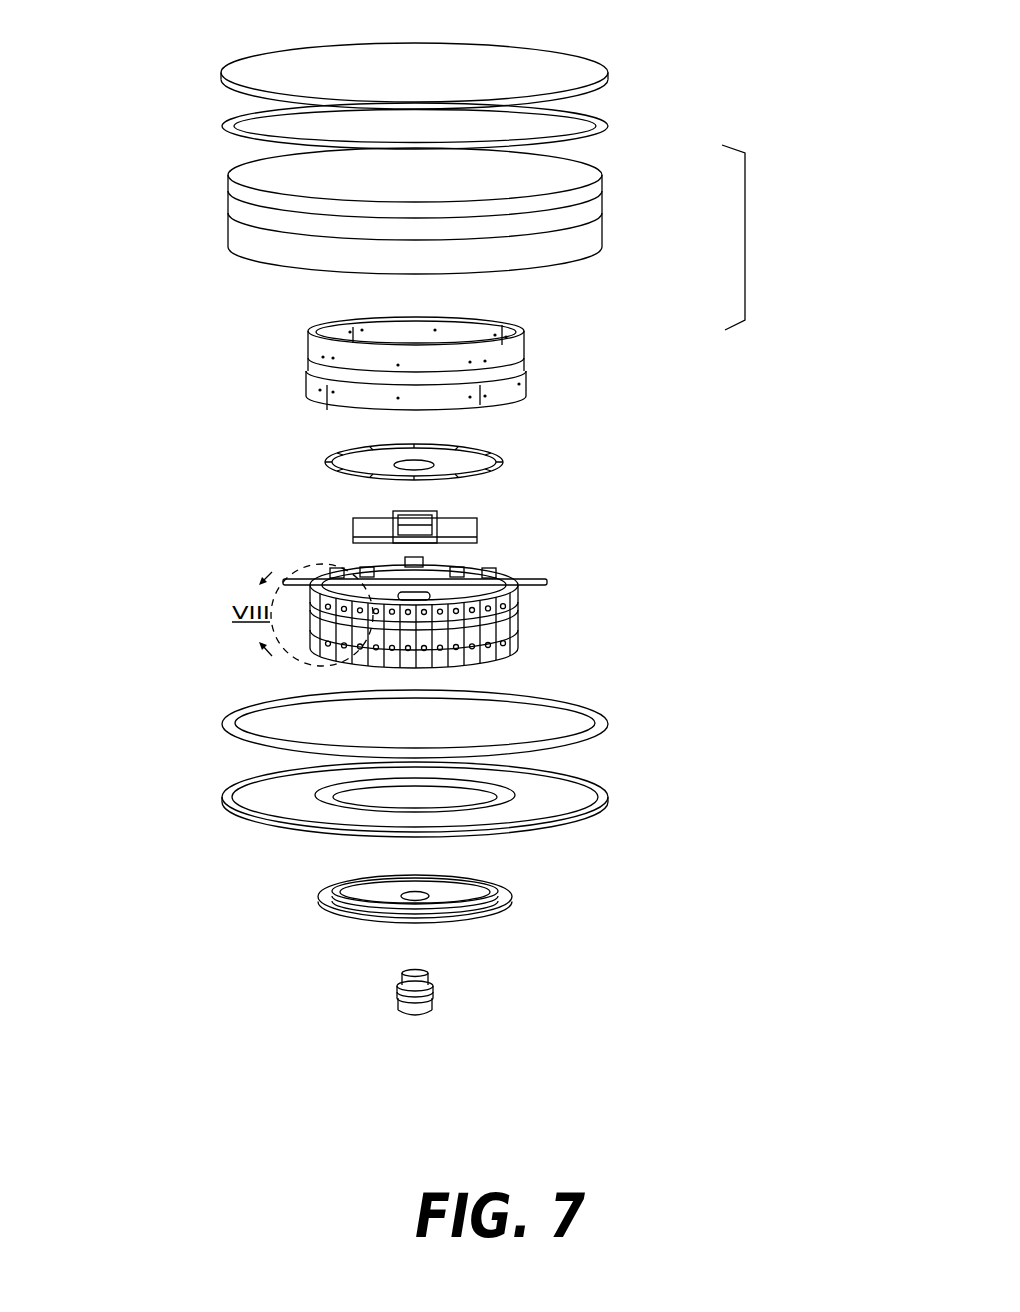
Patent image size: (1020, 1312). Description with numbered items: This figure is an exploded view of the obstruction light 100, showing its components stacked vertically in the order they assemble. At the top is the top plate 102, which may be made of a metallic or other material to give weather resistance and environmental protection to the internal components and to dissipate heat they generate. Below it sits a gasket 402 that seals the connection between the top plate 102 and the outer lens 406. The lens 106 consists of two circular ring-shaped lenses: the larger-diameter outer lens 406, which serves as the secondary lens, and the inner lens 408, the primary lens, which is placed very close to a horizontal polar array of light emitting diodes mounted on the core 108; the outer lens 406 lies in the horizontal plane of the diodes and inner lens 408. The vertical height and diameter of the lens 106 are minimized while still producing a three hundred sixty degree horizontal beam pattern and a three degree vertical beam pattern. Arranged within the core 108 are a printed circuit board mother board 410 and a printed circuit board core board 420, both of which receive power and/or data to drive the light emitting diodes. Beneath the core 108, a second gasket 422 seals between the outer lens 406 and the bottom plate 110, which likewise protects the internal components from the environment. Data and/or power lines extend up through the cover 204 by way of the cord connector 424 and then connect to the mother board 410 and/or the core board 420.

The obstruction light 100 is at (180, 170).
The top plate 102 is at (607, 82).
The gasket 402 is at (603, 118).
The outer lens 406 is at (590, 220).
The lens 106 is at (745, 235).
The inner lens 408 is at (525, 372).
The printed circuit board mother board 410 is at (503, 458).
The printed circuit board core board 420 is at (477, 525).
The core 108 is at (517, 620).
The gasket 422 is at (608, 722).
The bottom plate 110 is at (612, 793).
The cover 204 is at (512, 898).
The cord connector 424 is at (433, 1000).